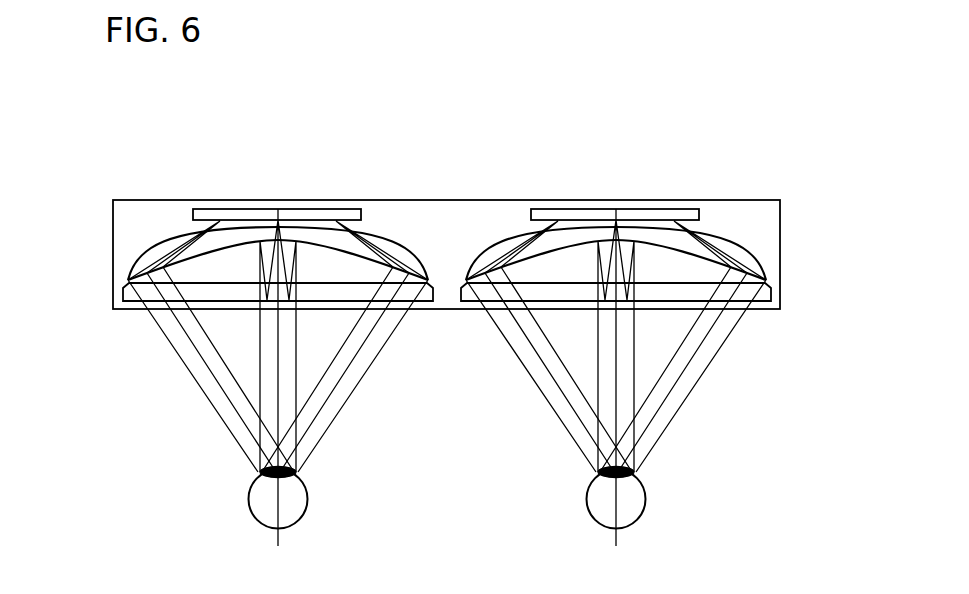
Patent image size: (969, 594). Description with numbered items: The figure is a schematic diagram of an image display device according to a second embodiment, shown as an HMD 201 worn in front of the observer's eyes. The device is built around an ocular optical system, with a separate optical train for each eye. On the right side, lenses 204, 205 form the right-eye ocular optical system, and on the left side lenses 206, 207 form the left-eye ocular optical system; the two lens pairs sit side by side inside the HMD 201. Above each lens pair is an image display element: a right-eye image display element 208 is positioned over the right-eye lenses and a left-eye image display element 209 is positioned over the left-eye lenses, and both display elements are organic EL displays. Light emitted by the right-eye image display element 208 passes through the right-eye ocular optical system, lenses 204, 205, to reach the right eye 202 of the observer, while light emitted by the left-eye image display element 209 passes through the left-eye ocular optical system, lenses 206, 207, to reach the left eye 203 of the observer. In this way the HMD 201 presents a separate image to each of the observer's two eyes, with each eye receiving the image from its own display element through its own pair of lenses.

The HMD 201 is at (140, 200).
The right eye 202 is at (635, 518).
The left eye 203 is at (297, 518).
The lens 204 is at (770, 290).
The lens 205 is at (747, 243).
The lens 206 is at (122, 295).
The lens 207 is at (143, 253).
The right-eye image display element 208 is at (643, 208).
The left-eye image display element 209 is at (323, 208).